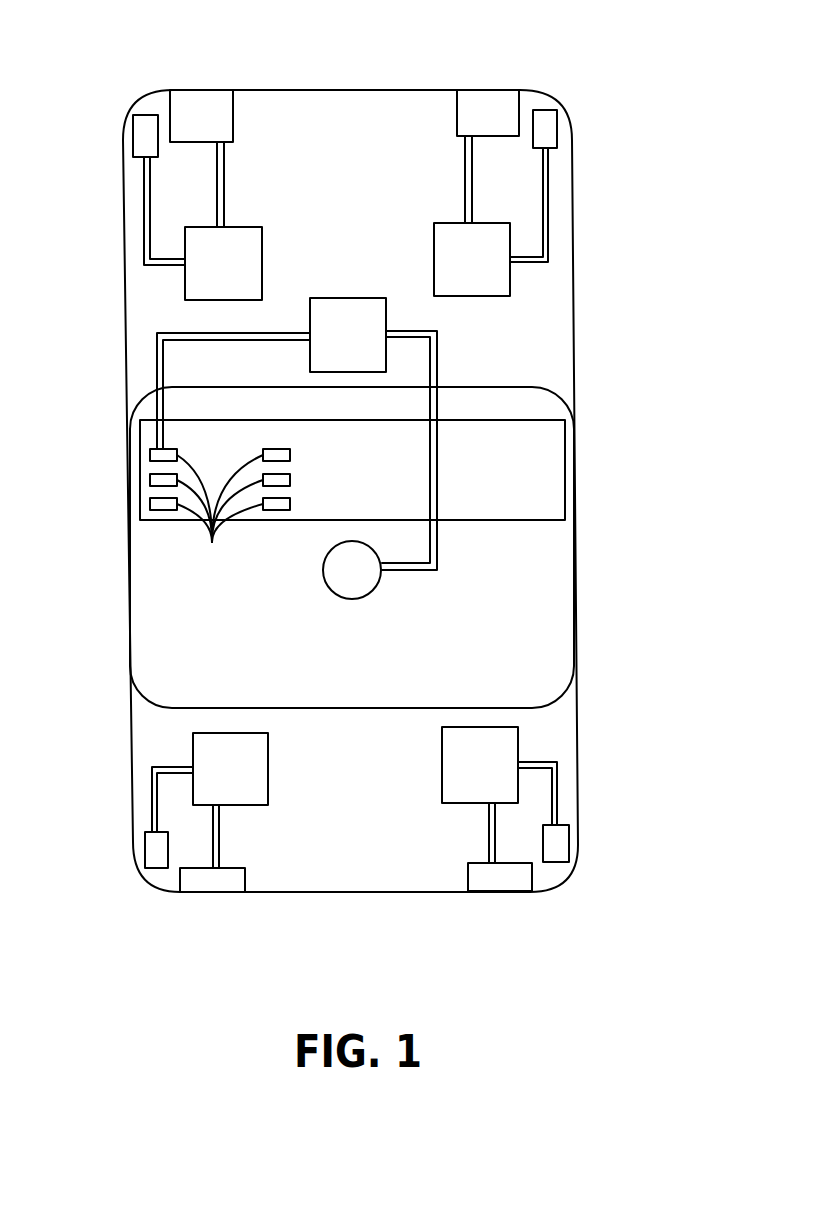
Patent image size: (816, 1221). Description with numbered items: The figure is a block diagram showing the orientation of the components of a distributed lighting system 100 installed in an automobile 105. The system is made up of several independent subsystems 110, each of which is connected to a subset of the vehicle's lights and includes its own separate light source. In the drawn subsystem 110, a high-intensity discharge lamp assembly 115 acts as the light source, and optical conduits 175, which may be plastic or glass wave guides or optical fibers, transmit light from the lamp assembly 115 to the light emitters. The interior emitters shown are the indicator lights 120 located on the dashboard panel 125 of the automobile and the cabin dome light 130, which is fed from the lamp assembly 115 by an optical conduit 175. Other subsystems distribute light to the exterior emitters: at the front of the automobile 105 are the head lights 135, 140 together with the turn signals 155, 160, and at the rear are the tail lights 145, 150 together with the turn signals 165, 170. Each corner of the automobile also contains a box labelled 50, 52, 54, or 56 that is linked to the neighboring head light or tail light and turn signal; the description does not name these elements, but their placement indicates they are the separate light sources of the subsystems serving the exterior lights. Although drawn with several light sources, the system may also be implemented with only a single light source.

The distributed lighting system 100 is at (630, 166).
The automobile 105 is at (573, 300).
The subsystem 110 is at (246, 366).
The high-intensity discharge lamp assembly 115 is at (370, 319).
The indicator lights 120 is at (220, 513).
The dashboard panel 125 is at (485, 489).
The cabin dome light 130 is at (323, 579).
The head light 135 is at (202, 89).
The head light 140 is at (477, 88).
The tail light 145 is at (210, 893).
The tail light 150 is at (497, 892).
The turn signal 155 is at (135, 117).
The turn signal 160 is at (555, 110).
The turn signal 165 is at (147, 850).
The turn signal 170 is at (569, 838).
The optical conduit 175 is at (157, 359).
The front left drive unit 50 is at (262, 240).
The front right drive unit 52 is at (434, 254).
The rear left drive unit 54 is at (268, 760).
The rear right drive unit 56 is at (442, 771).